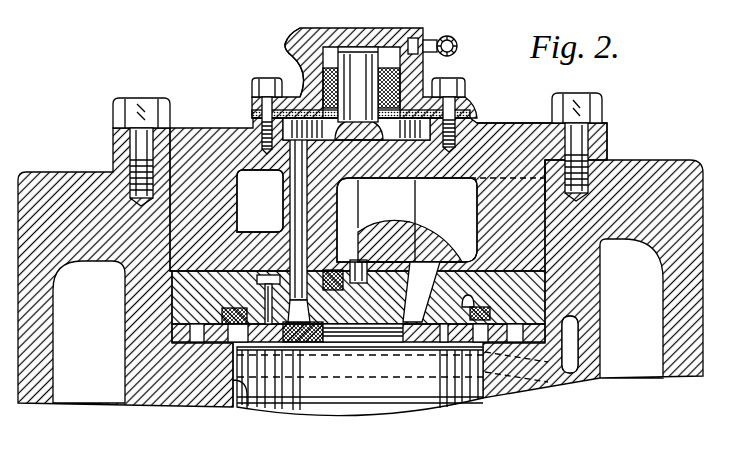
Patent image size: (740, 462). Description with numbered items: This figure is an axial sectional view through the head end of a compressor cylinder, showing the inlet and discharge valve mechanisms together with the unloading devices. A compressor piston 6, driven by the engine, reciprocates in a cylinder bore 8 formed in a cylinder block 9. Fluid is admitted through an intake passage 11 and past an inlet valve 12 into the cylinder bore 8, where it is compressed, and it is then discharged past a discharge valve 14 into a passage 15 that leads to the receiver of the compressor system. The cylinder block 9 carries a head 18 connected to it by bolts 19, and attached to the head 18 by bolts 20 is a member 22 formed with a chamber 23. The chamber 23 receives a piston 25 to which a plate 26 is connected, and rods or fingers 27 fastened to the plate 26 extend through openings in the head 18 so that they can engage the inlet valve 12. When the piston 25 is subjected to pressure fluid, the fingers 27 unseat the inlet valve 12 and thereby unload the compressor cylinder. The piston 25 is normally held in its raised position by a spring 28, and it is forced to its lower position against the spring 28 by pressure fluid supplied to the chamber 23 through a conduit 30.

The piston 6 is at (349, 385).
The cylinder bore 8 is at (241, 385).
The cylinder block 9 is at (185, 396).
The intake passage 11 is at (452, 200).
The inlet valve 12 is at (415, 300).
The discharge valve 14 is at (470, 290).
The passage 15 is at (571, 355).
The head 18 is at (192, 136).
The bolts 19 is at (136, 110).
The bolts 20 is at (268, 88).
The member 22 is at (392, 38).
The chamber 23 is at (296, 42).
The piston 25 is at (355, 75).
The plate 26 is at (452, 114).
The rods or fingers 27 is at (300, 196).
The spring 28 is at (372, 150).
The conduit 30 is at (456, 43).